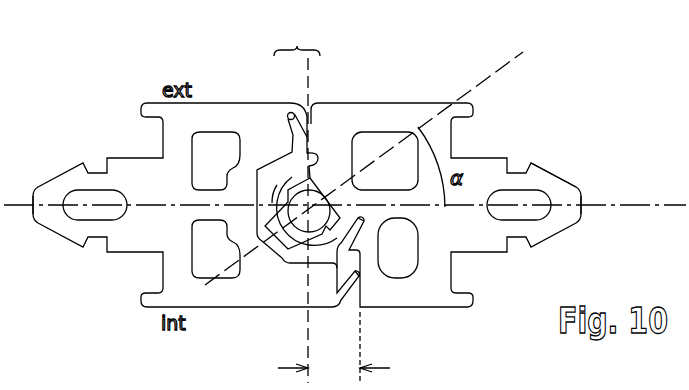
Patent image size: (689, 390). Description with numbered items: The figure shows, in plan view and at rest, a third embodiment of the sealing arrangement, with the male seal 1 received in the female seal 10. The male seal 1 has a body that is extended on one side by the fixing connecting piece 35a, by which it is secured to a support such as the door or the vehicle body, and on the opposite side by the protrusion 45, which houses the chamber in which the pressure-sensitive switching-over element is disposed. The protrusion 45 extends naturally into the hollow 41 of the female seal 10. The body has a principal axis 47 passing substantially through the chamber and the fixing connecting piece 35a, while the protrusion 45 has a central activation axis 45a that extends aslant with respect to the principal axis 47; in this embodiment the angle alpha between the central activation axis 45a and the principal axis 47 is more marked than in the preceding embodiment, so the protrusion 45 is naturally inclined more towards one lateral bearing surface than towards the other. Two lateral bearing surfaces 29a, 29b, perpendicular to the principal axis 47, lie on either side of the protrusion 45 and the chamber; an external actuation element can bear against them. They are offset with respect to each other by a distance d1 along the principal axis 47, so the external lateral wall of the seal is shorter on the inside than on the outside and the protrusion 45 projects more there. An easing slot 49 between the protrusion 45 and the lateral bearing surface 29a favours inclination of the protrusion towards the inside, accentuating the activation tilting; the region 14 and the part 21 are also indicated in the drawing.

The male seal 1 is at (408, 92).
The female seal 10 is at (101, 302).
The retaining bracket 14 is at (283, 242).
The slit 21 is at (297, 38).
The lateral bearing surface 29a is at (361, 290).
The lateral bearing surface 29b is at (314, 130).
The fixing connecting piece 35a is at (557, 187).
The hollow 41 is at (277, 175).
The protrusion 45 is at (303, 250).
The central activation axis 45a is at (512, 62).
The principal axis 47 is at (590, 203).
The easing slot 49 is at (357, 223).
The offset distance d1 is at (334, 347).